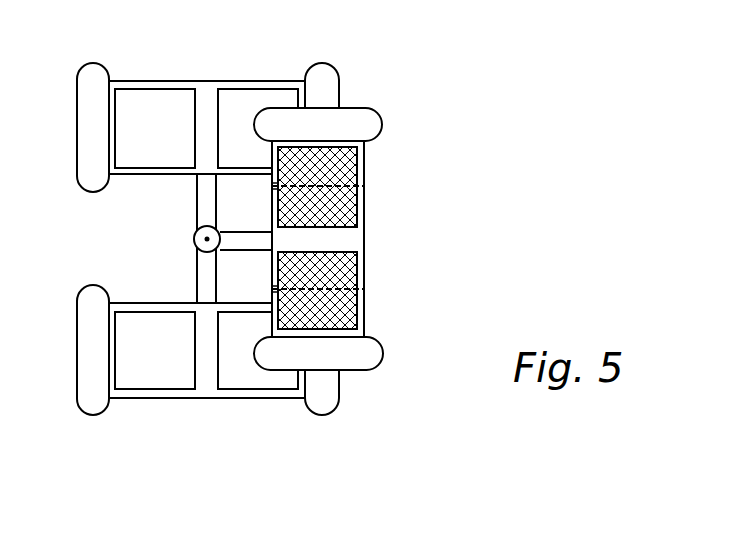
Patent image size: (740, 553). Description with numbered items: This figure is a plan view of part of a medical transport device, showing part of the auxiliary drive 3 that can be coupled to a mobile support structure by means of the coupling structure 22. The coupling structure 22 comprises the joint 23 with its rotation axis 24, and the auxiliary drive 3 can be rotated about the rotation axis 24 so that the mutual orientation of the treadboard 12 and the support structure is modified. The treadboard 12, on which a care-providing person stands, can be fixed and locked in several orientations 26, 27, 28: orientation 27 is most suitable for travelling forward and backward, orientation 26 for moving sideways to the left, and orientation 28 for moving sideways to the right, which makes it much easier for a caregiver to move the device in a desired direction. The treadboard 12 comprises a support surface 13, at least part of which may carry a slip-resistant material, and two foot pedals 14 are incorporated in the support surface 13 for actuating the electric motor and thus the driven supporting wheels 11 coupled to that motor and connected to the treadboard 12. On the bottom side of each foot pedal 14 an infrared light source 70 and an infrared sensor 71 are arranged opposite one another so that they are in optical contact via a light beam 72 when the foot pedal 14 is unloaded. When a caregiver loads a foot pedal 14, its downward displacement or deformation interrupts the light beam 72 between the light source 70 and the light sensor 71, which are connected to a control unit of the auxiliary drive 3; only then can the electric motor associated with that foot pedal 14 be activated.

The auxiliary drive 3 is at (376, 239).
The driven supporting wheels 11 is at (372, 357).
The treadboard 12 is at (364, 313).
The support surface 13 is at (332, 241).
The foot pedals 14 is at (328, 317).
The coupling structure 22 is at (237, 245).
The joint 23 is at (194, 238).
The rotation axis 24 is at (207, 239).
The orientation 26 is at (209, 79).
The orientation 27 is at (462, 240).
The orientation 28 is at (209, 400).
The infrared light source 70 is at (364, 290).
The infrared sensor 71 is at (272, 289).
The light beam 72 is at (328, 290).